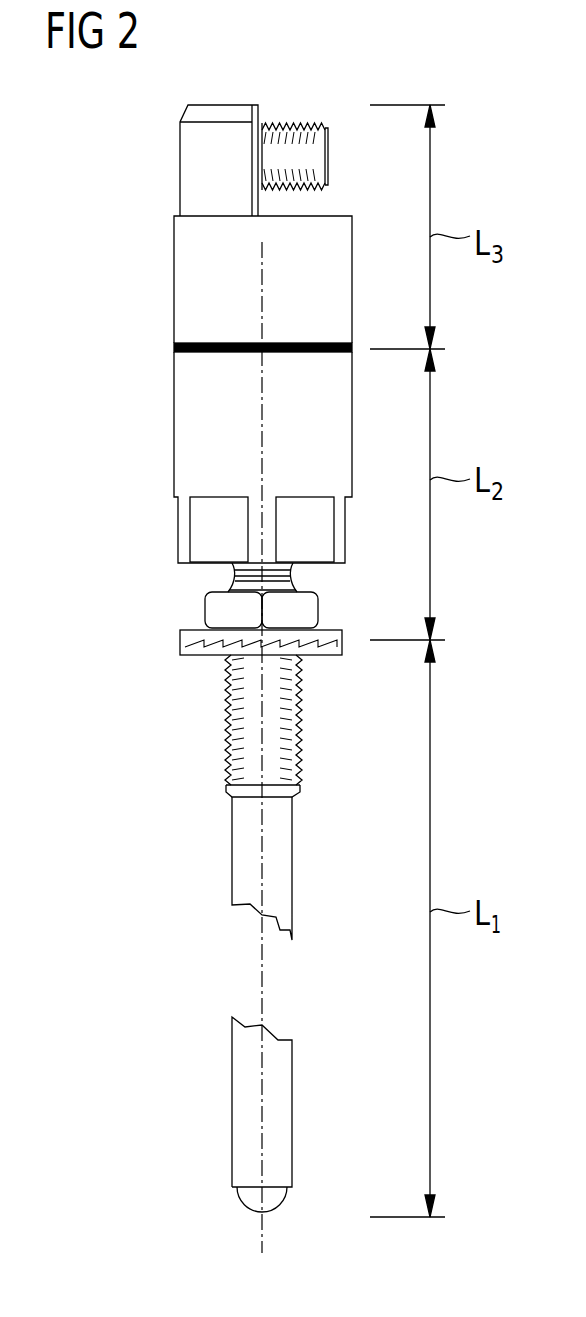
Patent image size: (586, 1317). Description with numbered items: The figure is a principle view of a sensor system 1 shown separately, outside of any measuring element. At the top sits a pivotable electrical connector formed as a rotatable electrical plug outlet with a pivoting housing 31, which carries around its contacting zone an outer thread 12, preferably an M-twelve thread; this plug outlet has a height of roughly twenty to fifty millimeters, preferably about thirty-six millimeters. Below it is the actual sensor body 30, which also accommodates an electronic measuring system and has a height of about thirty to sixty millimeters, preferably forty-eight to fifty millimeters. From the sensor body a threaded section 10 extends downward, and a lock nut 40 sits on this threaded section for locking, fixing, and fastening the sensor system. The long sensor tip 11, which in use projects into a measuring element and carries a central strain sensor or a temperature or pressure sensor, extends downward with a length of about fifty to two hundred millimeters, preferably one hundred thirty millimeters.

The sensor system 1 is at (93, 208).
The threaded section 10 is at (225, 722).
The sensor tip 11 is at (232, 843).
The outer thread 12 is at (307, 160).
The sensor body 30 is at (218, 430).
The pivoting housing 31 is at (218, 280).
The lock nut 40 is at (205, 607).